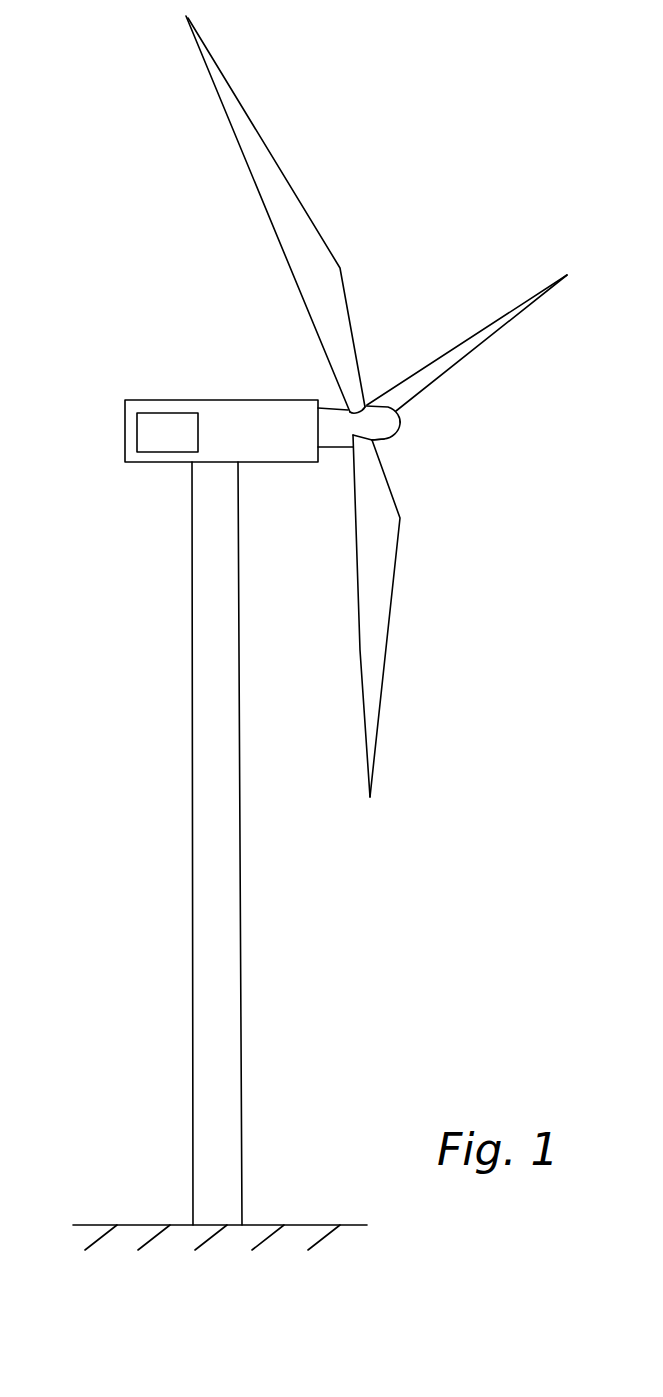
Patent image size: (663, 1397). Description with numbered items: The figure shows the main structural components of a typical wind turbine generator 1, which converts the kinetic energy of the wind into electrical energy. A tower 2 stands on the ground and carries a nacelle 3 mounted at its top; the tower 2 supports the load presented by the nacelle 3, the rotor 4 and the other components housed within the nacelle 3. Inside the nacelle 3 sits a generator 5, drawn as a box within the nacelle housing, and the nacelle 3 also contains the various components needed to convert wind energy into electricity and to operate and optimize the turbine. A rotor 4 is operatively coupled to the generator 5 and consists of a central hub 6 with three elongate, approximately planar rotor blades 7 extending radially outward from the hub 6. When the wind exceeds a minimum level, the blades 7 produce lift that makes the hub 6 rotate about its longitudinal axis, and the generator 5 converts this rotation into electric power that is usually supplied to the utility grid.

The wind turbine generator 1 is at (470, 128).
The tower 2 is at (190, 660).
The nacelle 3 is at (148, 400).
The rotor 4 is at (371, 400).
The generator 5 is at (148, 452).
The central hub 6 is at (391, 436).
The rotor blades 7 is at (299, 100).